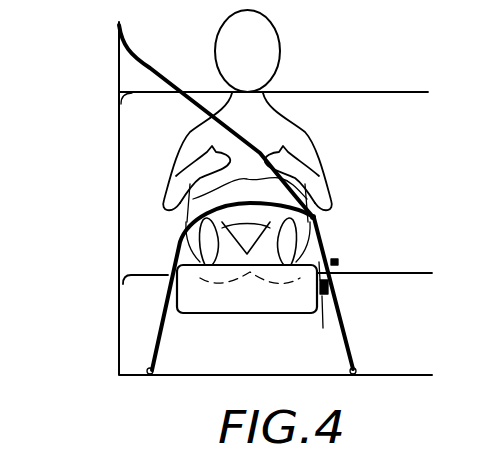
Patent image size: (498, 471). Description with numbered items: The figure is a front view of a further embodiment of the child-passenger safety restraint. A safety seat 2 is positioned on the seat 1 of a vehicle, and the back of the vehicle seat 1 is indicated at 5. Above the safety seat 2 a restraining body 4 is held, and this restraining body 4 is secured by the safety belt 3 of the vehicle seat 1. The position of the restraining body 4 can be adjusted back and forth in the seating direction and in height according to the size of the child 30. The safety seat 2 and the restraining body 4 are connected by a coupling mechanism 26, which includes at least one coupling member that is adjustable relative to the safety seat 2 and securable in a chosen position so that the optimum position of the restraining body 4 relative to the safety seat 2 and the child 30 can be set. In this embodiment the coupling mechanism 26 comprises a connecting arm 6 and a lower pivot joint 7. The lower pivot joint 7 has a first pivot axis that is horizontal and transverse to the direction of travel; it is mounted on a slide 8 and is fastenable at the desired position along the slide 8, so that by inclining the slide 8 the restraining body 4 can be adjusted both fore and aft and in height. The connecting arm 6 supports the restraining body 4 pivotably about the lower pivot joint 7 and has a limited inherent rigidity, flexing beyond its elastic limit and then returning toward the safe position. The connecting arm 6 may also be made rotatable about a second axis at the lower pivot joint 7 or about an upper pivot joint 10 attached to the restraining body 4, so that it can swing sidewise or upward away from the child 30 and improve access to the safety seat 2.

The vehicle seat 1 is at (127, 340).
The safety seat 2 is at (222, 307).
The safety belt 3 is at (153, 72).
The restraining body 4 is at (238, 188).
The back of the vehicle seat 5 is at (133, 172).
The connecting arm 6 is at (326, 238).
The lower pivot joint 7 is at (330, 289).
The slide 8 is at (325, 310).
The upper pivot joint 10 is at (312, 216).
The coupling mechanism 26 is at (338, 262).
The child 30 is at (305, 145).